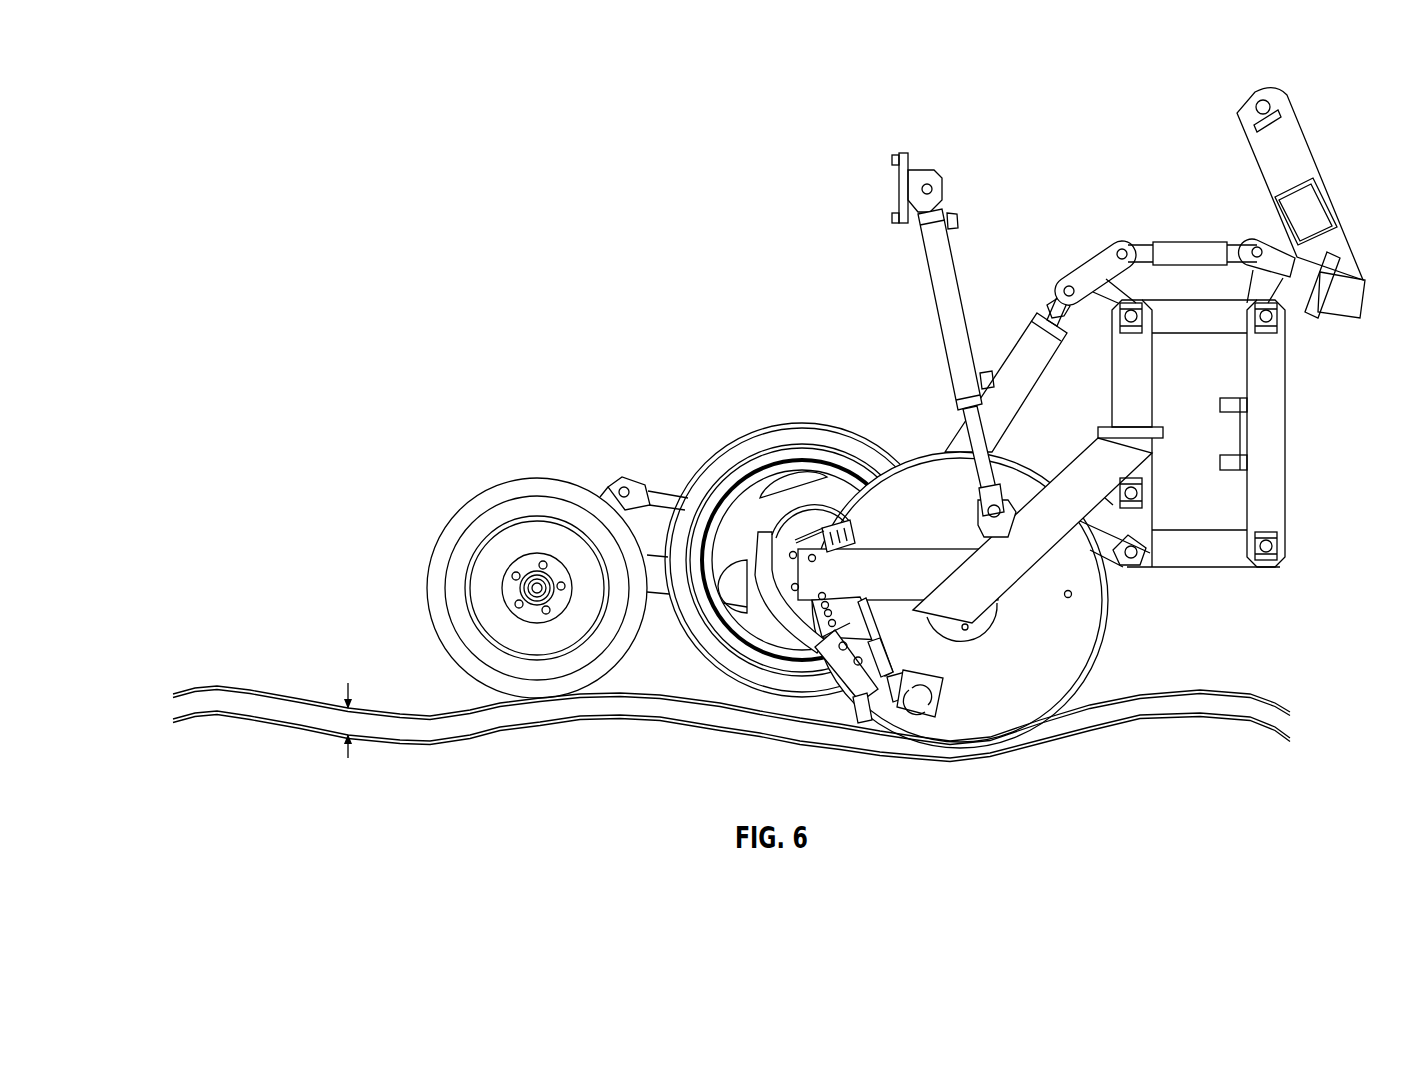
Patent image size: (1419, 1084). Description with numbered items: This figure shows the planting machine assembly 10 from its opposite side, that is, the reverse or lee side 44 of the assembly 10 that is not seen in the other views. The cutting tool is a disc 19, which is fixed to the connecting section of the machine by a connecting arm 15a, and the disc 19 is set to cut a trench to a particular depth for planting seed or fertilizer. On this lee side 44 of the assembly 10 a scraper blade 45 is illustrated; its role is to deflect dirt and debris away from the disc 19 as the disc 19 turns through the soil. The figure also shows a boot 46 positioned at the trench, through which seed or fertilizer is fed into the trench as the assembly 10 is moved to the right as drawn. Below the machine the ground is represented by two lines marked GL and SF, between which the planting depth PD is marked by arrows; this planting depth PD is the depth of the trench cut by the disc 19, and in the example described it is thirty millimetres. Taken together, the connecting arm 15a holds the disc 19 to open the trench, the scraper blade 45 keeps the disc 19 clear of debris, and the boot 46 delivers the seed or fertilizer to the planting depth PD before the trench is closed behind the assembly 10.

The assembly 10 is at (514, 251).
The connecting arm 15a is at (1003, 563).
The disc 19 is at (1100, 650).
The lee side 44 is at (1072, 594).
The scraper blade 45 is at (943, 695).
The boot 46 is at (860, 703).
The ground level GL is at (217, 686).
The soil furrow bottom SF is at (217, 711).
The planting depth PD is at (348, 758).